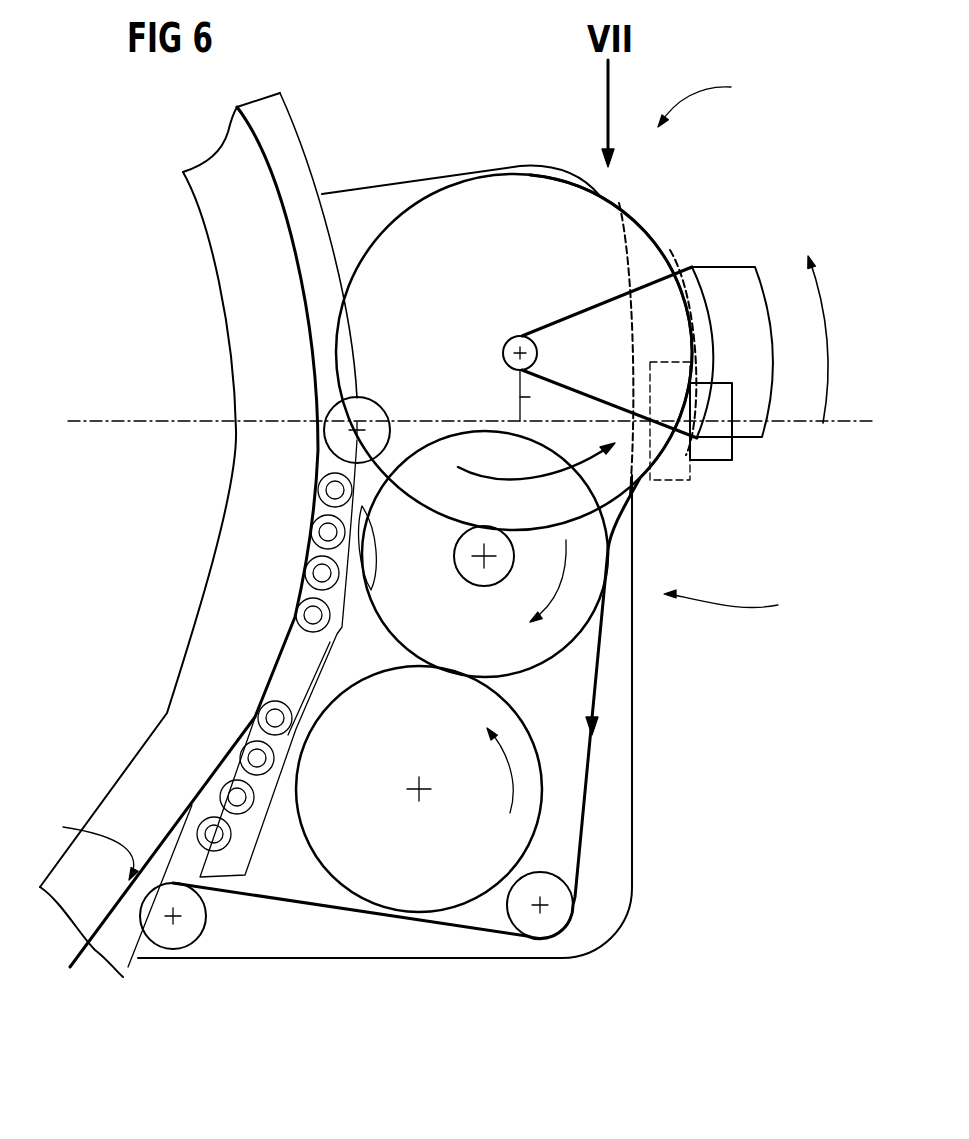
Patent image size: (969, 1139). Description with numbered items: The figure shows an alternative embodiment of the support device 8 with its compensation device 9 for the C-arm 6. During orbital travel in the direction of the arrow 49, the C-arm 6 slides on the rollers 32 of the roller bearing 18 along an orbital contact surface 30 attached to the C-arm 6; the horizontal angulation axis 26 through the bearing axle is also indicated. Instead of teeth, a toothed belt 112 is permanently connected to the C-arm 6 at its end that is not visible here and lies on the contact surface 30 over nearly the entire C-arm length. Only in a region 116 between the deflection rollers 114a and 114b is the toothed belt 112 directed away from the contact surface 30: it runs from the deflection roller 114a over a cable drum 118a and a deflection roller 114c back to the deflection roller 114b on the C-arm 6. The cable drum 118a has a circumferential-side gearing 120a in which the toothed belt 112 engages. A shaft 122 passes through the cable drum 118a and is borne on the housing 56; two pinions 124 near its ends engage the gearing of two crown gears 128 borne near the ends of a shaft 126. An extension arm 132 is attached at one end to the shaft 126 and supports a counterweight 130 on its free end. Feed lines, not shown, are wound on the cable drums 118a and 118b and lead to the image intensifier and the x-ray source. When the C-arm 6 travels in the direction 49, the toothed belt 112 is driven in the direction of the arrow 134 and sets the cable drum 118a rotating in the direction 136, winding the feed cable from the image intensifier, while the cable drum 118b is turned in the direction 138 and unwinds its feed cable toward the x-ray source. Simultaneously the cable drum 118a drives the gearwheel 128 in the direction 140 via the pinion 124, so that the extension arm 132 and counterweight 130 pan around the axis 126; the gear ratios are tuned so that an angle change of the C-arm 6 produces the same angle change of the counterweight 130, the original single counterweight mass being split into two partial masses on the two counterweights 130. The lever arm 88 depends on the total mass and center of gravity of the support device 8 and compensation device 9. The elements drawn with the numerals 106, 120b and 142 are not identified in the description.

The C-arm 6 is at (180, 241).
The support device 8 is at (704, 99).
The compensation device 9 is at (471, 716).
The roller bearing 18 is at (174, 577).
The angulation axis 26 is at (135, 421).
The orbital contact surface 30 is at (304, 299).
The rollers 32 is at (335, 490).
The arrow indicating direction of orbital travel 49 is at (86, 845).
The housing 56 is at (388, 198).
The lever arm 88 is at (622, 242).
The bearing block 106 is at (677, 460).
The toothed belt 112 is at (270, 164).
The deflection roller 114a is at (340, 440).
The deflection roller 114b is at (180, 932).
The deflection roller 114c is at (557, 915).
The region 116 is at (256, 673).
The cable drum 118a is at (597, 530).
The cable drum 118b is at (530, 813).
The circumferential-side gearing 120a is at (566, 648).
The roller surface 120b is at (600, 860).
The shaft 122 is at (497, 548).
The pinions 124 is at (565, 610).
The shaft 126 is at (508, 337).
The crown gears 128 is at (581, 215).
The counterweight 130 is at (737, 310).
The extension arm 132 is at (667, 298).
The arrow indicating belt direction 134 is at (594, 725).
The arrow indicating cable drum rotation 136 is at (567, 562).
The arrow indicating cable drum rotation 138 is at (525, 770).
The arrow indicating gearwheel motion 140 is at (502, 478).
The lower roller 142 is at (419, 792).